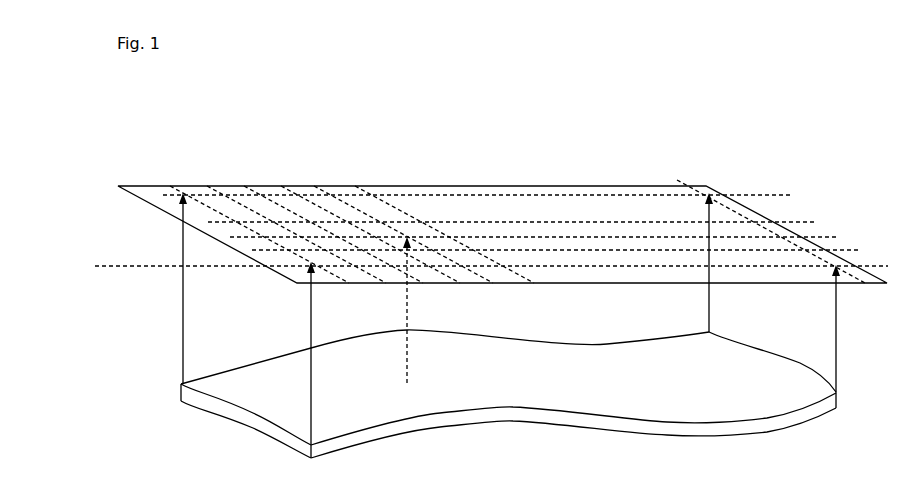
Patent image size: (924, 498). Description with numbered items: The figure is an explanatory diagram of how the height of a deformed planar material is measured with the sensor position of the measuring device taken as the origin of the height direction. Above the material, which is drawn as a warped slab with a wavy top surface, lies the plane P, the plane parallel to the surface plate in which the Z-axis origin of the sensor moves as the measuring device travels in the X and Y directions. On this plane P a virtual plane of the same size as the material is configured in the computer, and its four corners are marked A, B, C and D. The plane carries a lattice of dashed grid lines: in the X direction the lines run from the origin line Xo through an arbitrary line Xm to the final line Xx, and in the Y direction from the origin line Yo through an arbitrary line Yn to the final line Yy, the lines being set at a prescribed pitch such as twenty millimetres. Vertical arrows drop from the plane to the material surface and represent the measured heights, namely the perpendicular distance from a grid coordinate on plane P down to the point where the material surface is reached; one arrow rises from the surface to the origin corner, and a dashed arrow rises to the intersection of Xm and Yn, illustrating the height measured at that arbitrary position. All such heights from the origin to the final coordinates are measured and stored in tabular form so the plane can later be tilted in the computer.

The plane P is at (502, 190).
The corner A of plane ABCD A is at (294, 353).
The corner B of plane ABCD B is at (861, 328).
The corner C of plane ABCD C is at (141, 267).
The corner D of plane ABCD D is at (722, 240).
The X origin coordinate Xo is at (246, 219).
The arbitrary X coordinate Xm is at (422, 248).
The final X coordinate Xx is at (766, 219).
The Y origin coordinate Yo is at (462, 265).
The arbitrary Y coordinate Yn is at (553, 235).
The final Y coordinate Yy is at (502, 187).